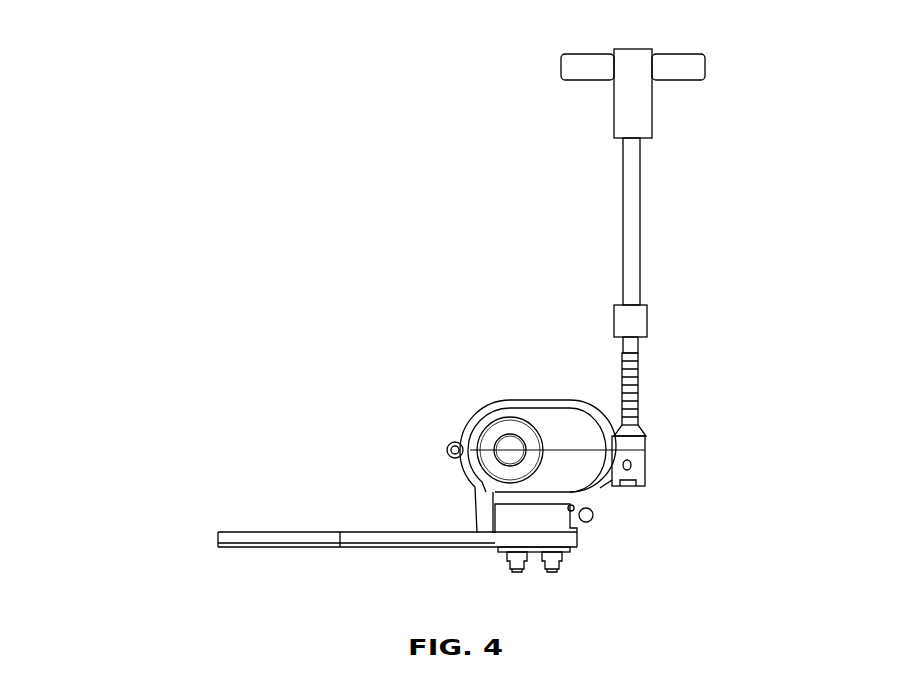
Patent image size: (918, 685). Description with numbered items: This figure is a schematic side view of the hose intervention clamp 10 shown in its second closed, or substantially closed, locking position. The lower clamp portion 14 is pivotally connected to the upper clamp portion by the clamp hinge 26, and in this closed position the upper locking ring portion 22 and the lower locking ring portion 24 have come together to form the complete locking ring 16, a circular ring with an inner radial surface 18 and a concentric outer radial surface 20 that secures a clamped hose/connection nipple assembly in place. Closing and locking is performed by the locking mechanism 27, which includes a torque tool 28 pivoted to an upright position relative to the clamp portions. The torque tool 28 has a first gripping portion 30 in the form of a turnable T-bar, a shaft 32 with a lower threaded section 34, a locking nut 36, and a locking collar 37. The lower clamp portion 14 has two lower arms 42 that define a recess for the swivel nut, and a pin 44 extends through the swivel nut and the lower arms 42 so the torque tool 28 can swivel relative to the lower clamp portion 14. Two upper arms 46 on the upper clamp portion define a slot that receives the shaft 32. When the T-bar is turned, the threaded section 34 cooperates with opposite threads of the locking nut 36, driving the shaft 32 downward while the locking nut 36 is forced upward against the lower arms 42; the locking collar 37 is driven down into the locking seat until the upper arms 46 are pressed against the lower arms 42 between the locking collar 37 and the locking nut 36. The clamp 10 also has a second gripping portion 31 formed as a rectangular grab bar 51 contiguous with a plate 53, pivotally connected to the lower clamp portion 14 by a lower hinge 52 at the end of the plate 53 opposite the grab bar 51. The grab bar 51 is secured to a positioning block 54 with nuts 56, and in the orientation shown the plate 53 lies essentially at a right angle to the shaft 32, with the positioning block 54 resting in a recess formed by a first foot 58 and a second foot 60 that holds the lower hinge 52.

The hose intervention clamp 10 is at (377, 164).
The lower clamp portion 14 is at (490, 482).
The locking ring 16 is at (507, 450).
The inner radial surface 18 is at (520, 427).
The outer radial surface 20 is at (490, 423).
The upper locking ring portion 22 is at (510, 434).
The lower locking ring portion 24 is at (535, 462).
The clamp hinge 26 is at (450, 448).
The locking mechanism 27 is at (705, 179).
The torque tool 28 is at (652, 110).
The first gripping portion 30 is at (630, 48).
The second gripping portion 31 is at (218, 547).
The shaft 32 is at (642, 208).
The lower threaded section 34 is at (637, 395).
The locking nut 36 is at (630, 483).
The locking collar 37 is at (636, 312).
The lower arms 42 is at (642, 470).
The pin 44 is at (630, 458).
The upper arms 46 is at (638, 436).
The grab bar 51 is at (273, 532).
The lower hinge 52 is at (588, 521).
The plate 53 is at (385, 542).
The positioning block 54 is at (560, 528).
The nuts 56 is at (520, 567).
The first foot 58 is at (483, 512).
The second foot 60 is at (587, 507).